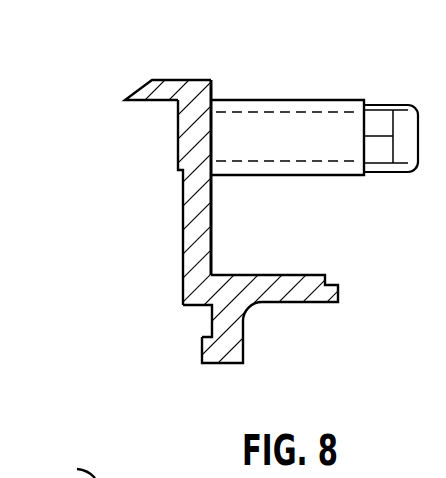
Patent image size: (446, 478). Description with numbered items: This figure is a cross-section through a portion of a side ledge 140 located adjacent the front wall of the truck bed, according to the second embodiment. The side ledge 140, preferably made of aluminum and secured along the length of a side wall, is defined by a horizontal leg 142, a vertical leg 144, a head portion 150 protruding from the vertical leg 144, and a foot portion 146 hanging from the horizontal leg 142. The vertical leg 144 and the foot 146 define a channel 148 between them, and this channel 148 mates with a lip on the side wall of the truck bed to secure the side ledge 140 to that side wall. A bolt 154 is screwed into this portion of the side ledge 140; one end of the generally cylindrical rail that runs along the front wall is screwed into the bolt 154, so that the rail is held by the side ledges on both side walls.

The side ledge 140 is at (190, 189).
The horizontal leg 142 is at (278, 287).
The vertical leg 144 is at (158, 190).
The foot portion 146 is at (237, 339).
The channel 148 is at (204, 324).
The head portion 150 is at (184, 93).
The bolt 154 is at (307, 138).